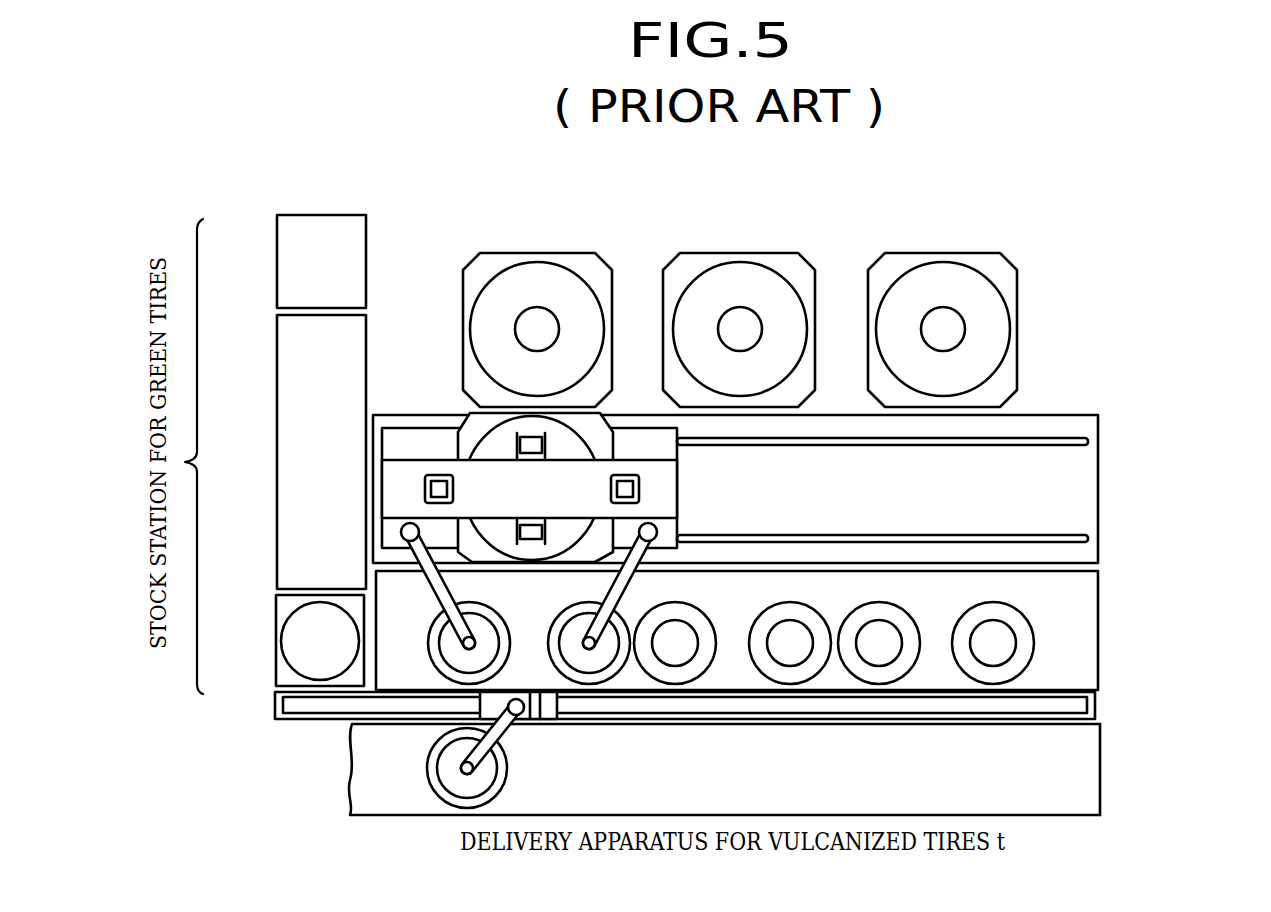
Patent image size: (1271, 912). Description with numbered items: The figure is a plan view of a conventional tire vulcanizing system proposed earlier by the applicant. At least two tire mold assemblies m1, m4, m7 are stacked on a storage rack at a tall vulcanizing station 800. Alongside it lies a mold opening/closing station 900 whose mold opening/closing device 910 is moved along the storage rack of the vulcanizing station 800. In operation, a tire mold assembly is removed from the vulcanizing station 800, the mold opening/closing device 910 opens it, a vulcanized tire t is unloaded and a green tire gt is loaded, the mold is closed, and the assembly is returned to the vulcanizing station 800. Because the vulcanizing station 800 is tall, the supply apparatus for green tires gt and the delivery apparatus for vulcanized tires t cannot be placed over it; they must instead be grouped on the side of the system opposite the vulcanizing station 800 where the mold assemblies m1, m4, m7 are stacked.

The vulcanizing station 800 is at (816, 289).
The tire mold assembly m1 is at (543, 252).
The tire mold assembly m4 is at (750, 252).
The tire mold assembly m7 is at (946, 252).
The mold opening/closing station 900 is at (813, 550).
The mold opening/closing device 910 is at (677, 497).
The green tire gt is at (289, 668).
The vulcanized tire t is at (440, 798).